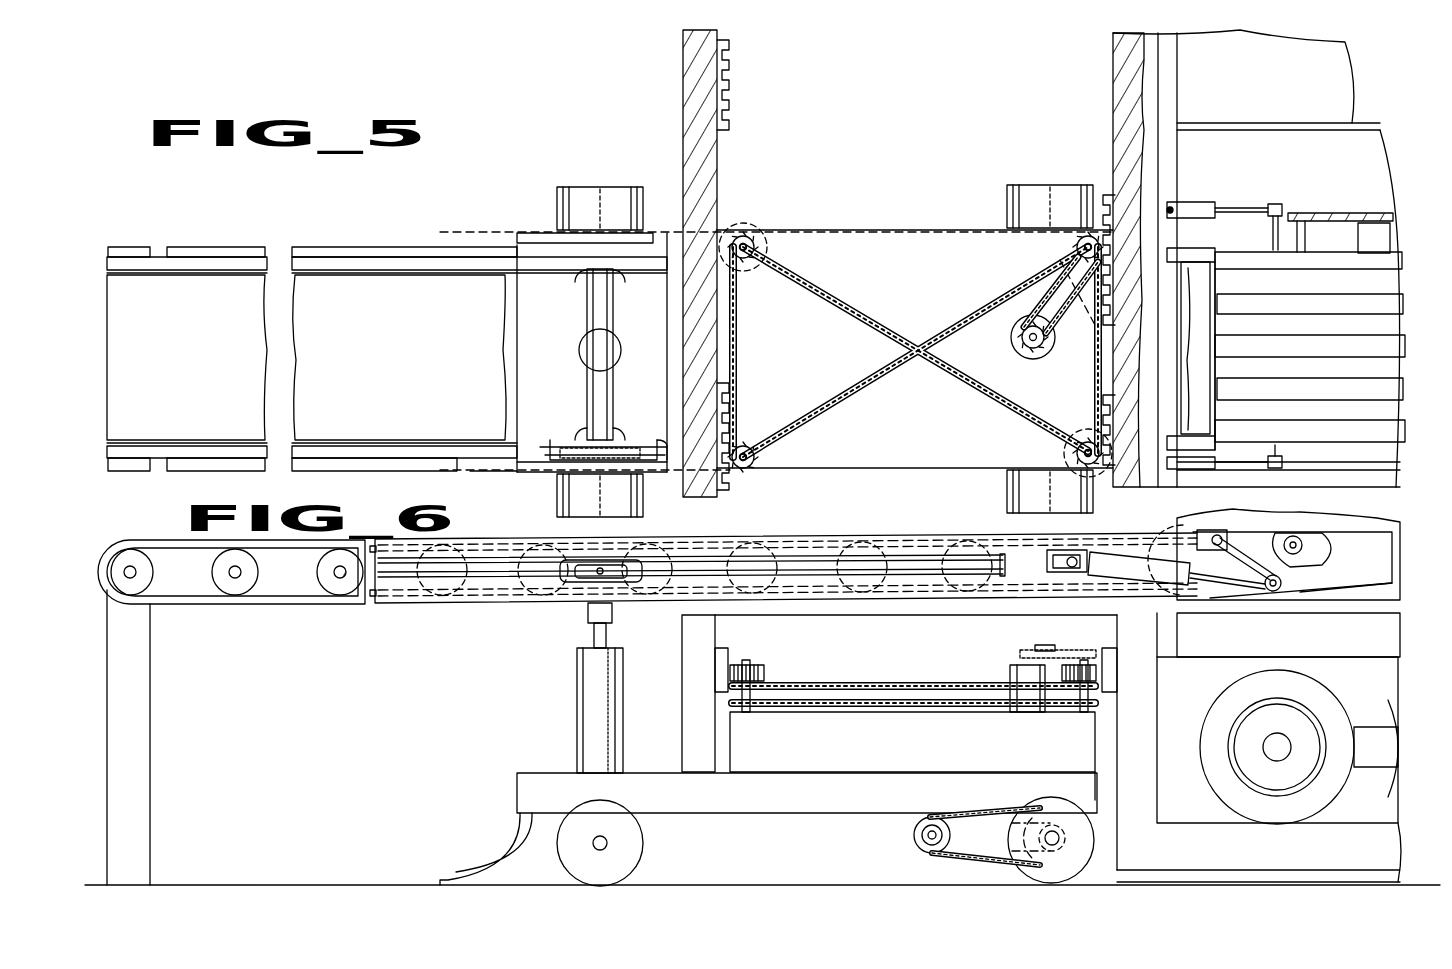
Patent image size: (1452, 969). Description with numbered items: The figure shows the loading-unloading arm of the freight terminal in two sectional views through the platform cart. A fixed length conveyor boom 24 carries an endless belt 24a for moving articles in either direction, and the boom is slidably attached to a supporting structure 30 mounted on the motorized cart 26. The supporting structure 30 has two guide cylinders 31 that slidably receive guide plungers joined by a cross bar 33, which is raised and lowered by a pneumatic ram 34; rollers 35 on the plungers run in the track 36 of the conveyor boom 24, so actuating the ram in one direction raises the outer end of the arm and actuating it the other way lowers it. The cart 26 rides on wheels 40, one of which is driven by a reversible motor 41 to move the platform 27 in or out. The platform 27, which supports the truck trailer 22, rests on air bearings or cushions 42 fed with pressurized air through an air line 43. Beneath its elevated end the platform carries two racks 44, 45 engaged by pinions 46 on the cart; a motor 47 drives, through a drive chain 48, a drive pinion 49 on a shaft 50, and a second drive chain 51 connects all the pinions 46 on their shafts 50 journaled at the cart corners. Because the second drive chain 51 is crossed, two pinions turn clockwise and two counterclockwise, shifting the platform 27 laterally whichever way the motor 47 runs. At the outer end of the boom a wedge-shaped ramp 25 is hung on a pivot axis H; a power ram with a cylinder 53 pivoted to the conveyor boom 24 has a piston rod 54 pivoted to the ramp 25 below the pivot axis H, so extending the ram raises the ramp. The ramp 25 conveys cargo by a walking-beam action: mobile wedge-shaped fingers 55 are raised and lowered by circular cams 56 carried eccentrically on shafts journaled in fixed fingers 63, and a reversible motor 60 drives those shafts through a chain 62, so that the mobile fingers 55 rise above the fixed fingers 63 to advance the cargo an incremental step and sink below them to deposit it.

In FIG. 6, the truck trailer 22 is at (1268, 652).
In FIG. 5, the fixed length conveyor boom 24 is at (438, 257).
In FIG. 5, the endless belt 24a is at (242, 282).
In FIG. 6, the endless belt 24a is at (275, 604).
In FIG. 5, the ramp 25 is at (1330, 248).
In FIG. 6, the ramp 25 is at (1362, 540).
In FIG. 6, the motorized cart 26 is at (517, 795).
In FIG. 5, the platform 27 is at (1305, 157).
In FIG. 6, the platform 27 is at (1326, 860).
In FIG. 5, the supporting structure 30 is at (575, 342).
In FIG. 6, the supporting structure 30 is at (578, 638).
In FIG. 5, the guide cylinder 31 is at (580, 280).
In FIG. 6, the guide cylinder 31 is at (590, 690).
In FIG. 5, the cross bar 33 is at (605, 311).
In FIG. 6, the cross bar 33 is at (588, 615).
In FIG. 5, the pneumatic ram 34 is at (622, 350).
In FIG. 5, the roller 35 is at (555, 448).
In FIG. 6, the roller 35 is at (572, 555).
In FIG. 5, the track 36 is at (545, 468).
In FIG. 6, the track 36 is at (665, 548).
In FIG. 5, the wheel 40 is at (596, 189).
In FIG. 6, the wheel 40 is at (643, 845).
In FIG. 6, the reversible motor 41 is at (914, 836).
In FIG. 6, the air bearing 42 is at (1265, 875).
In FIG. 6, the air line 43 is at (497, 868).
In FIG. 5, the rack 44 is at (730, 45).
In FIG. 6, the rack 44 is at (715, 668).
In FIG. 5, the rack 45 is at (1108, 200).
In FIG. 6, the rack 45 is at (1117, 673).
In FIG. 5, the pinion 46 is at (752, 232).
In FIG. 6, the pinion 46 is at (764, 670).
In FIG. 5, the motor 47 is at (1012, 345).
In FIG. 6, the motor 47 is at (1025, 712).
In FIG. 5, the drive chain 48 is at (1030, 305).
In FIG. 6, the drive chain 48 is at (1060, 650).
In FIG. 5, the drive pinion 49 is at (1075, 243).
In FIG. 5, the shaft 50 is at (748, 256).
In FIG. 6, the shaft 50 is at (746, 660).
In FIG. 5, the second drive chain 51 is at (940, 330).
In FIG. 6, the second drive chain 51 is at (868, 695).
In FIG. 5, the cylinder 53 is at (1193, 202).
In FIG. 6, the cylinder 53 is at (1150, 585).
In FIG. 5, the piston rod 54 is at (1252, 206).
In FIG. 6, the piston rod 54 is at (1246, 590).
In FIG. 5, the mobile wedge-shaped finger 55 is at (1250, 330).
In FIG. 6, the mobile wedge-shaped finger 55 is at (1320, 535).
In FIG. 6, the circular cam 56 is at (1284, 543).
In FIG. 5, the reversible motor 60 is at (1380, 242).
In FIG. 5, the chain 62 is at (1312, 213).
In FIG. 5, the fixed finger 63 is at (1328, 274).
In FIG. 6, the fixed finger 63 is at (1322, 594).
In FIG. 6, the pivot axis H is at (1218, 535).